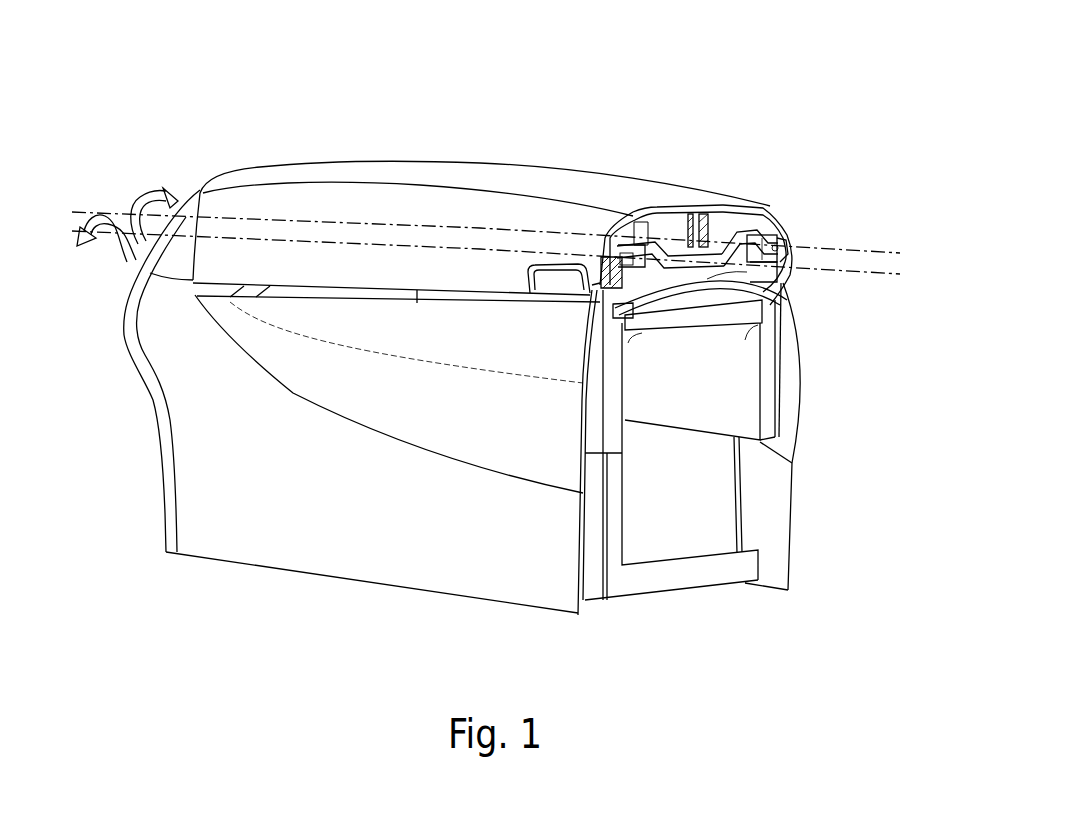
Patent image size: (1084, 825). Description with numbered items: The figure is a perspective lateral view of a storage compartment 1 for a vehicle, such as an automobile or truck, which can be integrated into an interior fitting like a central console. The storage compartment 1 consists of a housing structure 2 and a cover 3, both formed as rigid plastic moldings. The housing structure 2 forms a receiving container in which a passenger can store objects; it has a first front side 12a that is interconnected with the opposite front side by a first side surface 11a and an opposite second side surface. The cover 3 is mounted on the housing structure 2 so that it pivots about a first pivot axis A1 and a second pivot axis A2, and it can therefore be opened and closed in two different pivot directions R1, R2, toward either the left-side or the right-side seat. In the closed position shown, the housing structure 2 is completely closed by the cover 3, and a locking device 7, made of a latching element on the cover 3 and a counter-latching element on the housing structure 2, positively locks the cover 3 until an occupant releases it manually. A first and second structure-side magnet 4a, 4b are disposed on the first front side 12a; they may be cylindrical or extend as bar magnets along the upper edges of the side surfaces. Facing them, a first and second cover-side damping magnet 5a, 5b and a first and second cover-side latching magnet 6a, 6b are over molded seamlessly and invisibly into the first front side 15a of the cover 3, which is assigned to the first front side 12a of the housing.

The storage compartment 1 is at (233, 143).
The housing structure 2 is at (283, 593).
The cover 3 is at (443, 183).
The first structure-side magnet 4a is at (648, 222).
The second structure-side magnet 4b is at (780, 223).
The first cover-side damping magnet 5a is at (633, 212).
The second cover-side damping magnet 5b is at (770, 214).
The first cover-side latching magnet 6a is at (596, 318).
The second cover-side latching magnet 6b is at (793, 247).
The locking device 7 is at (560, 282).
The first side surface 11a is at (217, 517).
The first front side 12a is at (797, 310).
The first front side of the cover 15a is at (701, 208).
The first pivot axis A1 is at (486, 267).
The second pivot axis A2 is at (486, 233).
The first pivot direction R1 is at (106, 243).
The second pivot direction R2 is at (150, 204).